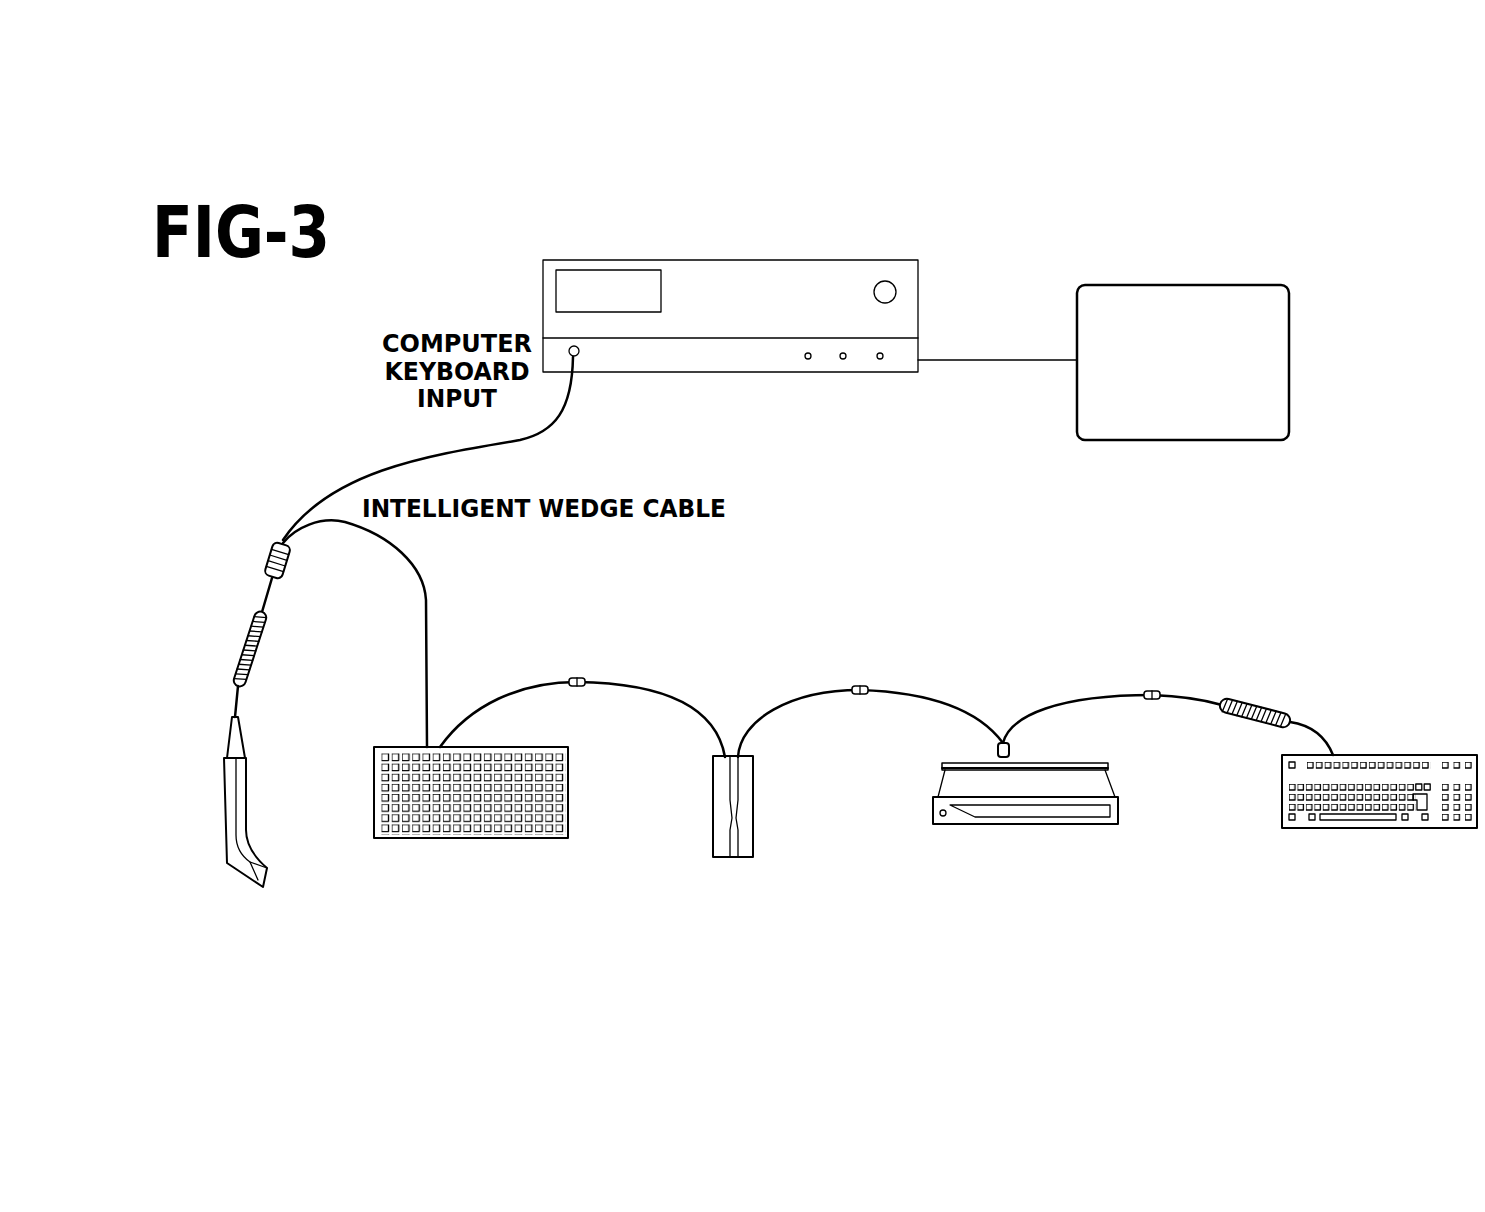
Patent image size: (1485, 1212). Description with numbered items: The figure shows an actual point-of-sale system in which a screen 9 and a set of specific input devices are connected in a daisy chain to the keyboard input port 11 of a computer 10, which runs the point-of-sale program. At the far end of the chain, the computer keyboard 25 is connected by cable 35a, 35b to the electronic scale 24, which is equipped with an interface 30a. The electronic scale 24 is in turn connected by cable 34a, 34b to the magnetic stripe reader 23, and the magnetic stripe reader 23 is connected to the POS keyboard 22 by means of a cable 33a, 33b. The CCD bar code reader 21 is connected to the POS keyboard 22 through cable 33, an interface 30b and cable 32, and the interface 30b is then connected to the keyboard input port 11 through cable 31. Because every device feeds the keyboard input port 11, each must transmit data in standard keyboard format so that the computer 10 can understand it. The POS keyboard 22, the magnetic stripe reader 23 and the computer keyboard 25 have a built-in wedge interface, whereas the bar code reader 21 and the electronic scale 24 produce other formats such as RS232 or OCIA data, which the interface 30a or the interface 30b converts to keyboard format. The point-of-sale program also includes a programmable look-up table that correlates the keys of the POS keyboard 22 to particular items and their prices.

The screen 9 is at (1289, 362).
The computer 10 is at (892, 260).
The keyboard input port 11 is at (577, 356).
The CCD bar code reader 21 is at (223, 803).
The POS keyboard 22 is at (568, 777).
The magnetic stripe reader 23 is at (753, 800).
The electronic scale 24 is at (936, 823).
The computer keyboard 25 is at (1285, 818).
The interface 30a is at (1010, 754).
The interface 30b is at (273, 545).
The cable 31 is at (418, 460).
The cable 32 is at (422, 582).
The cable 33 is at (266, 593).
The cable 33a is at (523, 683).
The cable 33b is at (625, 683).
The cable 34a is at (807, 697).
The cable 34b is at (922, 697).
The cable 35a is at (1097, 693).
The cable 35b is at (1192, 692).